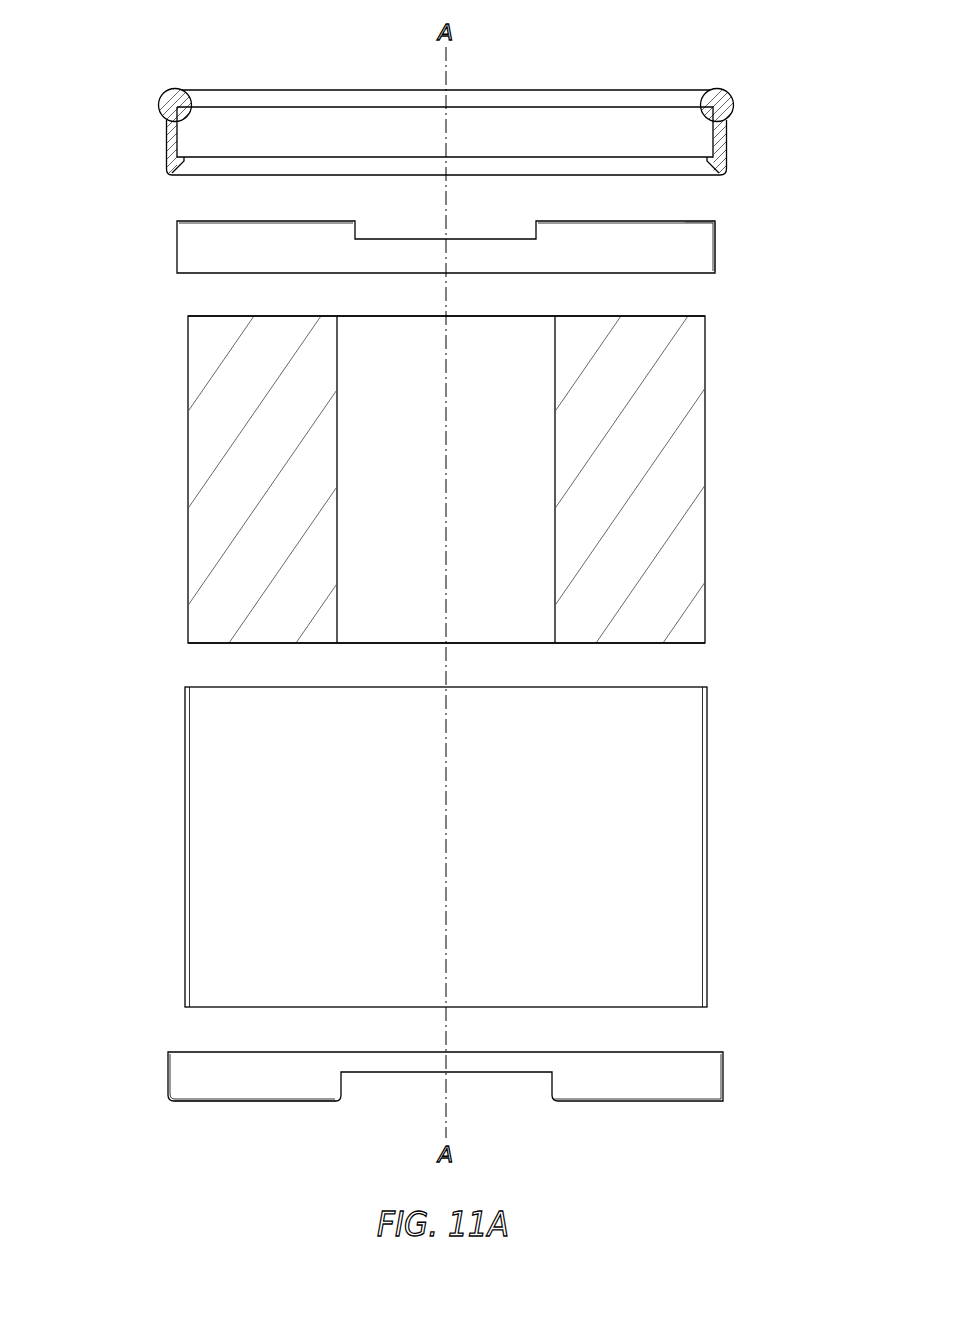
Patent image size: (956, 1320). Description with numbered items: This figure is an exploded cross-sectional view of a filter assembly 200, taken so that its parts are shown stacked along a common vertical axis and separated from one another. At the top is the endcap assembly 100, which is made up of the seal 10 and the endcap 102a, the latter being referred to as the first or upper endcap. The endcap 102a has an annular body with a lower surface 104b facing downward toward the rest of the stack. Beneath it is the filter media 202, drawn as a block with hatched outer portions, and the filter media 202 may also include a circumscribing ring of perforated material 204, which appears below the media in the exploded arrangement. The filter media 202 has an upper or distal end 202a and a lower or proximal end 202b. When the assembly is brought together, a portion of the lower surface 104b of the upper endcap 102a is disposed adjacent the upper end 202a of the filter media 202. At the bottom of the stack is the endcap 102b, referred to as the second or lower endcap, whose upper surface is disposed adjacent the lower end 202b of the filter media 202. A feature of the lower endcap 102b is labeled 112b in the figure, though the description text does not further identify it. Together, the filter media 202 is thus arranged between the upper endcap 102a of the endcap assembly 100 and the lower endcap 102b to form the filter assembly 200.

The filter assembly 200 is at (108, 58).
The endcap assembly 100 is at (797, 136).
The seal 10 is at (737, 138).
The endcap 102a is at (723, 242).
The lower surface 104b is at (685, 222).
The filter media 202 is at (178, 500).
The upper end 202a is at (201, 315).
The lower end 202b is at (205, 645).
The ring of perforated material 204 is at (719, 866).
The endcap 102b is at (736, 1078).
The lower ring recess surface 112b is at (198, 1098).